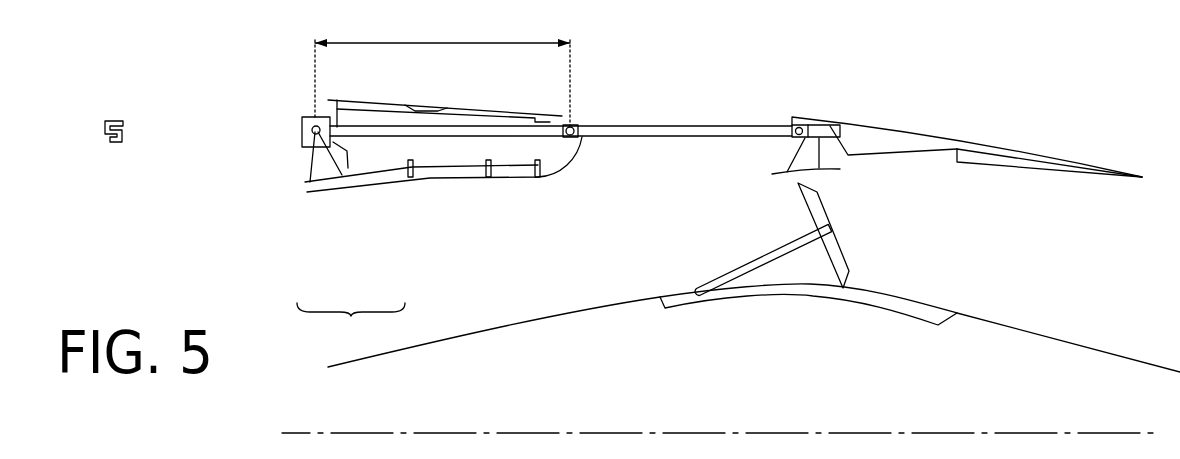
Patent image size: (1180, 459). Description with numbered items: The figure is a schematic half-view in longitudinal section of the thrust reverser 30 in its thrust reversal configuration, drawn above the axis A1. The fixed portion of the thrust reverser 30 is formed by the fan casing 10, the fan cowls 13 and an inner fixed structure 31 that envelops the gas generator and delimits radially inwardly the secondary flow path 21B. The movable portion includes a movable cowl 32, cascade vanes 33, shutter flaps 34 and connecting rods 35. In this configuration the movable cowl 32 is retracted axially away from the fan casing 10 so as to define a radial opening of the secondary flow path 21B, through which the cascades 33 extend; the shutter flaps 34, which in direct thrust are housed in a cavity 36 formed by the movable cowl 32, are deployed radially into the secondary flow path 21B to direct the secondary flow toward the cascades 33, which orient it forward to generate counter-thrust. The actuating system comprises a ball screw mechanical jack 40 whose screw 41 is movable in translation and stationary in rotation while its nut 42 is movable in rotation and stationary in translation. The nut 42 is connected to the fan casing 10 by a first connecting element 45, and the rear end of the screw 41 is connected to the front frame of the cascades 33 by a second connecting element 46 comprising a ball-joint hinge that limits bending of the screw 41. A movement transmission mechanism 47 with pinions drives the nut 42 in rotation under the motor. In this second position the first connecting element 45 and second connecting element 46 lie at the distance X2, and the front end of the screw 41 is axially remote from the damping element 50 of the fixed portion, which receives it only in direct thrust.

The fan casing 10 is at (325, 192).
The fan cowls 13 is at (440, 100).
The secondary flow path 21B is at (505, 311).
The thrust reverser 30 is at (934, 104).
The inner fixed structure 31 is at (1013, 328).
The movable cowl 32 is at (1008, 148).
The cascade vanes 33 is at (677, 123).
The shutter flaps 34 is at (834, 257).
The connecting rods 35 is at (757, 263).
The cavity 36 is at (895, 153).
The mechanical jack 40 is at (351, 326).
The screw 41 is at (473, 130).
The nut 42 is at (303, 147).
The first connecting element 45 is at (302, 120).
The second connecting element 46 is at (574, 138).
The movement transmission mechanism 47 is at (300, 132).
The damping element 50 is at (112, 142).
The axis A1 is at (295, 432).
The distance X2 is at (442, 69).